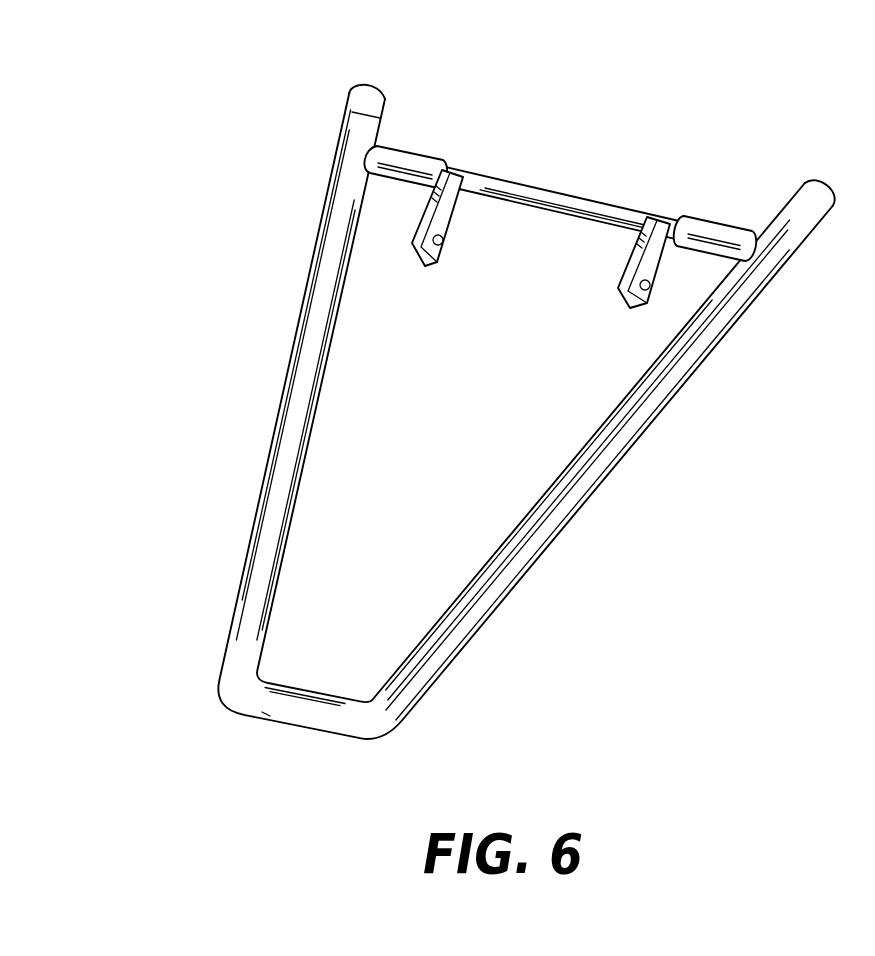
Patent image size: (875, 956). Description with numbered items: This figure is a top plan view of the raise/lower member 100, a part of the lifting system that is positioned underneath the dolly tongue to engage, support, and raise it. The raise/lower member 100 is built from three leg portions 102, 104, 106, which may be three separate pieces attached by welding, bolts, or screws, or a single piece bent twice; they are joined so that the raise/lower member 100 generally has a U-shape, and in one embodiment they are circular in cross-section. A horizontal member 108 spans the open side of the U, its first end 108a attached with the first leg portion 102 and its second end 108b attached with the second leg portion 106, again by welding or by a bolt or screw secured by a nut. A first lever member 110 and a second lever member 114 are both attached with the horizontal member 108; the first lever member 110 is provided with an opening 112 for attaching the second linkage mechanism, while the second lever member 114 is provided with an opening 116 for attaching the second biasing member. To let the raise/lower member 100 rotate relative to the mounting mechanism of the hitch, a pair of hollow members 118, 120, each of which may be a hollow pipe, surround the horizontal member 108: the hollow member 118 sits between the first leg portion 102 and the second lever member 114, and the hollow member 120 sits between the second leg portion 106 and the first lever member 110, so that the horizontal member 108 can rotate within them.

The raise/lower member 100 is at (213, 166).
The first leg portion 102 is at (266, 455).
The leg portion 104 is at (298, 727).
The second leg portion 106 is at (582, 507).
The horizontal member 108 is at (546, 190).
The first end 108a is at (364, 151).
The second end 108b is at (756, 230).
The first lever member 110 is at (622, 262).
The opening 112 is at (652, 288).
The second lever member 114 is at (423, 266).
The opening 116 is at (443, 242).
The hollow member 118 is at (410, 150).
The hollow member 120 is at (722, 216).